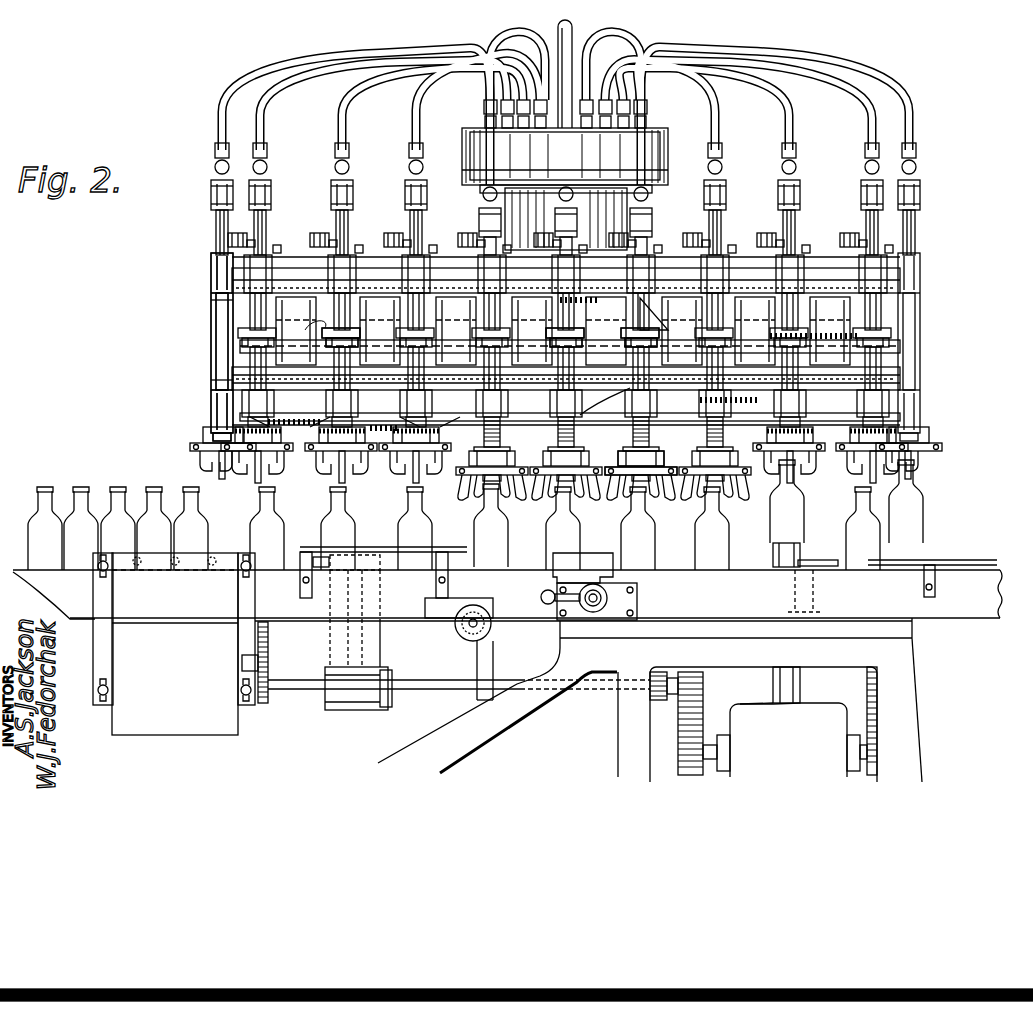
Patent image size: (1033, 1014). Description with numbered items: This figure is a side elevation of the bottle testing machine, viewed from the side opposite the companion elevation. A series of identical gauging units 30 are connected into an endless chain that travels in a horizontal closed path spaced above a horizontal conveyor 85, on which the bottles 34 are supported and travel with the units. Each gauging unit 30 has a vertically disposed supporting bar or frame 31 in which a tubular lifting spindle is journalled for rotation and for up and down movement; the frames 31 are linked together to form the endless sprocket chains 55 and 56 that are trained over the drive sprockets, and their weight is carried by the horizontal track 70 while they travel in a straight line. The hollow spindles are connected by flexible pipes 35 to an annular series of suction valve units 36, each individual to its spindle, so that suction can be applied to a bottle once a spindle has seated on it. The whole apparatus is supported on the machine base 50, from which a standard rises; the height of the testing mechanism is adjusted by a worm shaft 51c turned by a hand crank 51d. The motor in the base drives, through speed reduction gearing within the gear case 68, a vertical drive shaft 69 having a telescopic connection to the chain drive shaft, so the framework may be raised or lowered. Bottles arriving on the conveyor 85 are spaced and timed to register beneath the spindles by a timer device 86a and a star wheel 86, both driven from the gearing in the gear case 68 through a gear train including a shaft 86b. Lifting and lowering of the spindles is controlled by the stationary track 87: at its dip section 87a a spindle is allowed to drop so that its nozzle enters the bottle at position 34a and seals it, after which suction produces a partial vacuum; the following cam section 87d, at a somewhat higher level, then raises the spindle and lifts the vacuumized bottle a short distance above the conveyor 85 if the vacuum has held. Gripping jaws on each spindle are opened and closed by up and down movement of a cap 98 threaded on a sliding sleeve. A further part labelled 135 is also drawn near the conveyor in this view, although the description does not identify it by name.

The gauging unit 30 is at (939, 297).
The supporting bar or frame 31 is at (213, 286).
The bottle 34 is at (268, 520).
The bottle position 34a is at (497, 533).
The flexible pipe 35 is at (418, 115).
The suction valve unit 36 is at (463, 156).
The machine base 50 is at (905, 672).
The worm shaft 51c is at (594, 590).
The hand crank 51d is at (540, 597).
The endless sprocket chain 55 is at (682, 388).
The endless sprocket chain 56 is at (622, 300).
The gear case 68 is at (822, 720).
The vertical drive shaft 69 is at (775, 686).
The horizontal track 70 is at (466, 426).
The horizontal conveyor 85 is at (20, 572).
The star wheel 86 is at (386, 558).
The timer device 86a is at (174, 644).
The shaft 86b is at (448, 682).
The stationary track 87 is at (308, 342).
The dip section 87a is at (536, 370).
The cam section 87d is at (606, 362).
The cap 98 is at (650, 455).
The bottle lift pedestal 135 is at (823, 560).